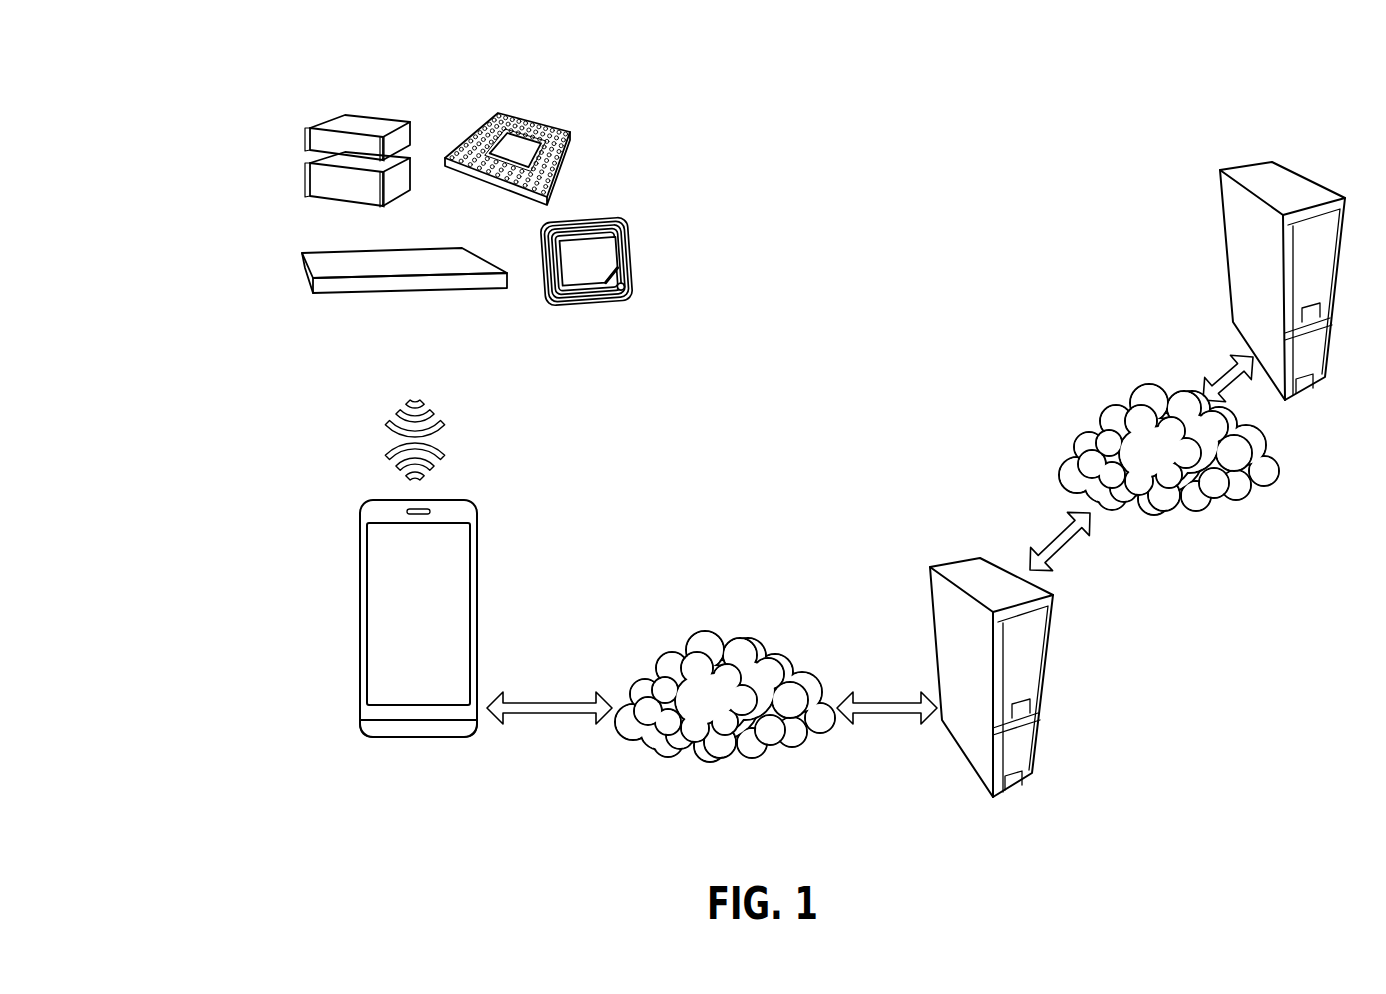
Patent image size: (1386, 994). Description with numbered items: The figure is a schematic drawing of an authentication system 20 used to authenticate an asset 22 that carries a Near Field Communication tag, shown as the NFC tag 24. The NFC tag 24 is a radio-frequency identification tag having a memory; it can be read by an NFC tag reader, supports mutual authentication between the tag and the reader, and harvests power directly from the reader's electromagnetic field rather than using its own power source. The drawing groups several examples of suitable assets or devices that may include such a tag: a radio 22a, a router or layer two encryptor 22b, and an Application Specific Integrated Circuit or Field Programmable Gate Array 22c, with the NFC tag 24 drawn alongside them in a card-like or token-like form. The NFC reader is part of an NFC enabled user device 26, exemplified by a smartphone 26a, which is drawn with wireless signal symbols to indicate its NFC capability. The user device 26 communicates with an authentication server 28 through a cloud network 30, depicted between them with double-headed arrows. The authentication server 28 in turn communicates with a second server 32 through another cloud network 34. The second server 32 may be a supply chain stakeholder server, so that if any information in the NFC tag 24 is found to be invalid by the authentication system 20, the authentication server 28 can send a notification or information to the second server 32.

The authentication system 20 is at (212, 400).
The asset 22 is at (283, 155).
The radio 22a is at (357, 127).
The router or layer 2 encryptor 22b is at (303, 266).
The Application Specific Integrated Circuit or Field Programmable Gate Array 22c is at (567, 158).
The NFC tag 24 is at (623, 267).
The NFC enabled user device 26 is at (326, 632).
The smartphone 26a is at (418, 727).
The authentication server 28 is at (1025, 743).
The cloud network 30 is at (710, 737).
The second server 32 is at (1248, 275).
The cloud network 34 is at (1197, 497).